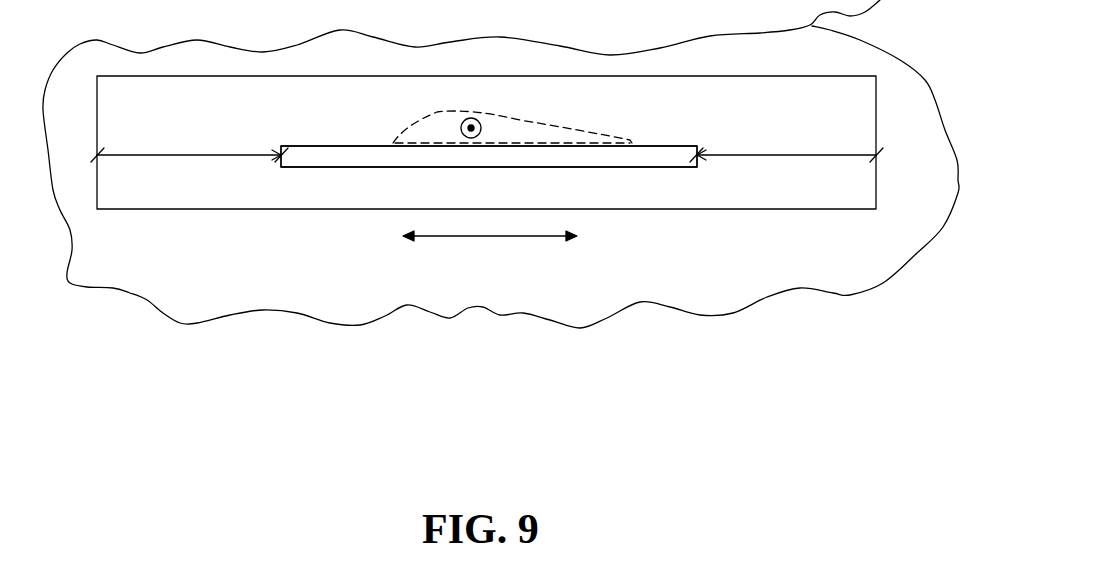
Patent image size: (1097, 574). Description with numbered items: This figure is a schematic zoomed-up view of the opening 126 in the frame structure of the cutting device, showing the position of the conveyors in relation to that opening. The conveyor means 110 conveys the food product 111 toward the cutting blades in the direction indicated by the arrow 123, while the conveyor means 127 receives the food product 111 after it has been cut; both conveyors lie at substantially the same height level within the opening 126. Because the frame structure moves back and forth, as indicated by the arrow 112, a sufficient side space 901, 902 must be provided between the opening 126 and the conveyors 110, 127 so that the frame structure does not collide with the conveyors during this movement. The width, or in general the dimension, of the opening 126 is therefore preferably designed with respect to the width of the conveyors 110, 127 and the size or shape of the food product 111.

The conveyor means 110 is at (315, 150).
The conveyor means 127 is at (489, 156).
The opening 126 is at (783, 130).
The arrow 123 is at (466, 139).
The food product 111 is at (568, 143).
The arrow 112 is at (468, 236).
The side space 901 is at (808, 157).
The side space 902 is at (187, 155).